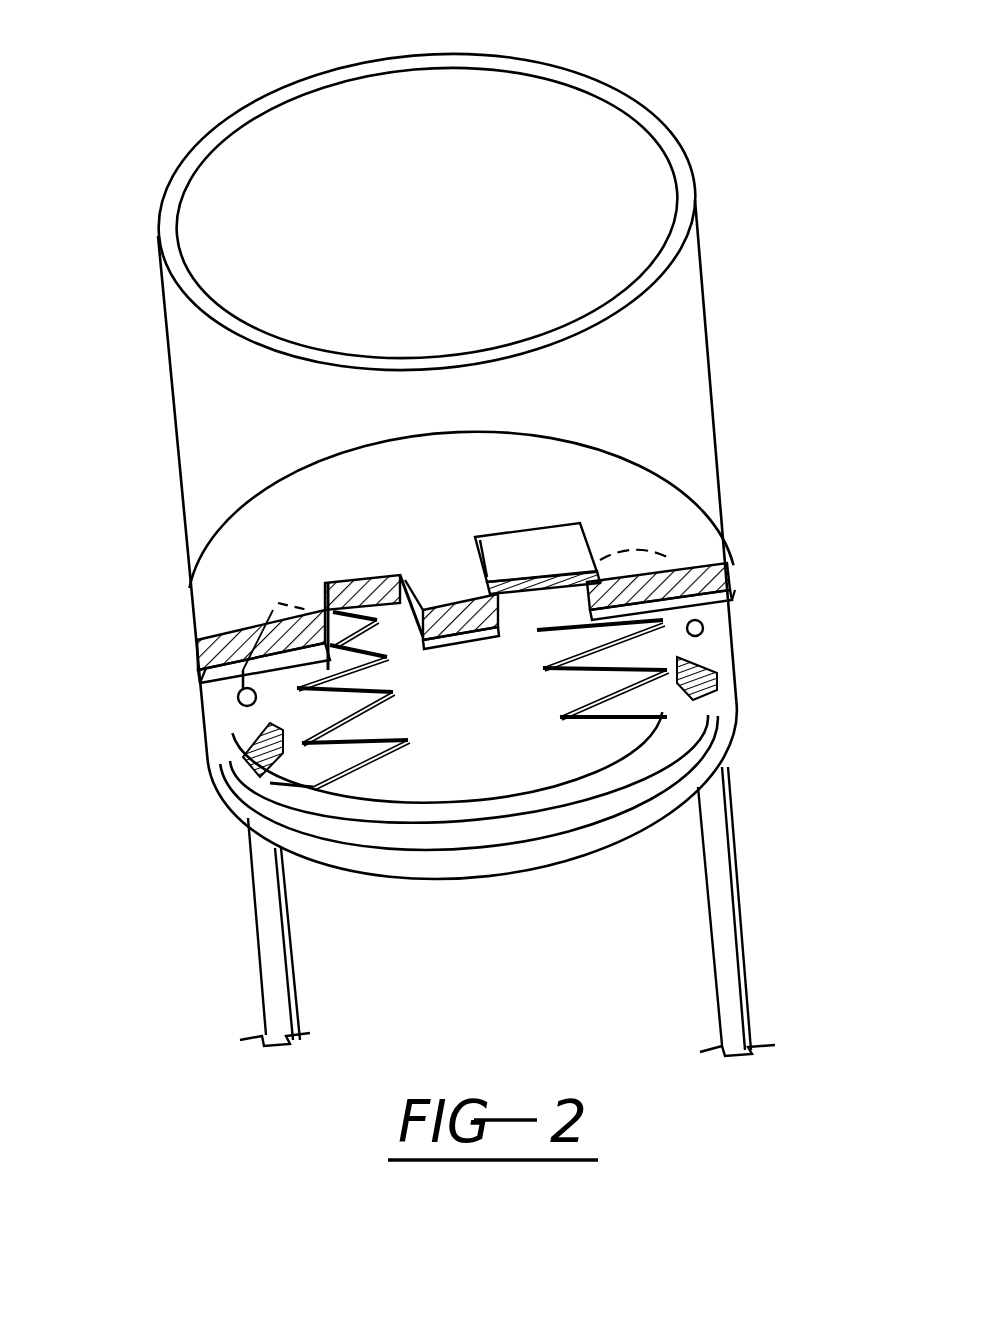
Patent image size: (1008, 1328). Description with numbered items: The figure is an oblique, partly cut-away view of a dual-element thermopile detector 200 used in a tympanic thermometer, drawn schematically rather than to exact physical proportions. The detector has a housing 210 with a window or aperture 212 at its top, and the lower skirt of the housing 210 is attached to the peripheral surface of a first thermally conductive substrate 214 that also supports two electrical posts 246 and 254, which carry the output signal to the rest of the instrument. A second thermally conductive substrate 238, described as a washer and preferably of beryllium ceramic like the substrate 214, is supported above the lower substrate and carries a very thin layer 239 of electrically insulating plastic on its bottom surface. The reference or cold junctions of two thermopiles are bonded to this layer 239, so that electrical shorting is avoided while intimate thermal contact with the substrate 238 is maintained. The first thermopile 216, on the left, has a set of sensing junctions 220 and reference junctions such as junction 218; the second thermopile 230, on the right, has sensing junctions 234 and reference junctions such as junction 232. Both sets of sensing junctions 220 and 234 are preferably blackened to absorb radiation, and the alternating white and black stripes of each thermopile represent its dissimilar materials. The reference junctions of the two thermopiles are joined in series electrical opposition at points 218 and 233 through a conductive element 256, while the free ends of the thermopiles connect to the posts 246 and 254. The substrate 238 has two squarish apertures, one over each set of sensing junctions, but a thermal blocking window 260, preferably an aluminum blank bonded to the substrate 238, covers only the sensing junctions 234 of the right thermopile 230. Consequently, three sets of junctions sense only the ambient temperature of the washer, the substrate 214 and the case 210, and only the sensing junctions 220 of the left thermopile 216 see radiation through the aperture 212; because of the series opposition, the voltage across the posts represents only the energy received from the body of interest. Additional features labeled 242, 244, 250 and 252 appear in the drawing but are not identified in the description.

The dual-element detector 200 is at (785, 262).
The housing 210 is at (197, 425).
The window or aperture 212 is at (282, 180).
The first thermally conductive substrate 214 is at (470, 868).
The first thermopile 216 is at (420, 570).
The reference junction 218 is at (283, 783).
The first set of sensing junctions 220 is at (393, 636).
The second thermopile 230 is at (657, 517).
The reference junction 232 is at (700, 660).
The reference junction connection point 233 is at (670, 718).
The second set of sensing junctions 234 is at (557, 748).
The second thermally conductive substrate 238 is at (500, 462).
The electrically insulating layer 239 is at (740, 570).
The contact edge 242 is at (667, 556).
The fastener 244 is at (740, 612).
The electrical post 246 is at (727, 890).
The contact edge 250 is at (278, 603).
The fastener 252 is at (237, 700).
The electrical post 254 is at (263, 931).
The conductive element 256 is at (557, 790).
The thermal blocking window 260 is at (480, 540).